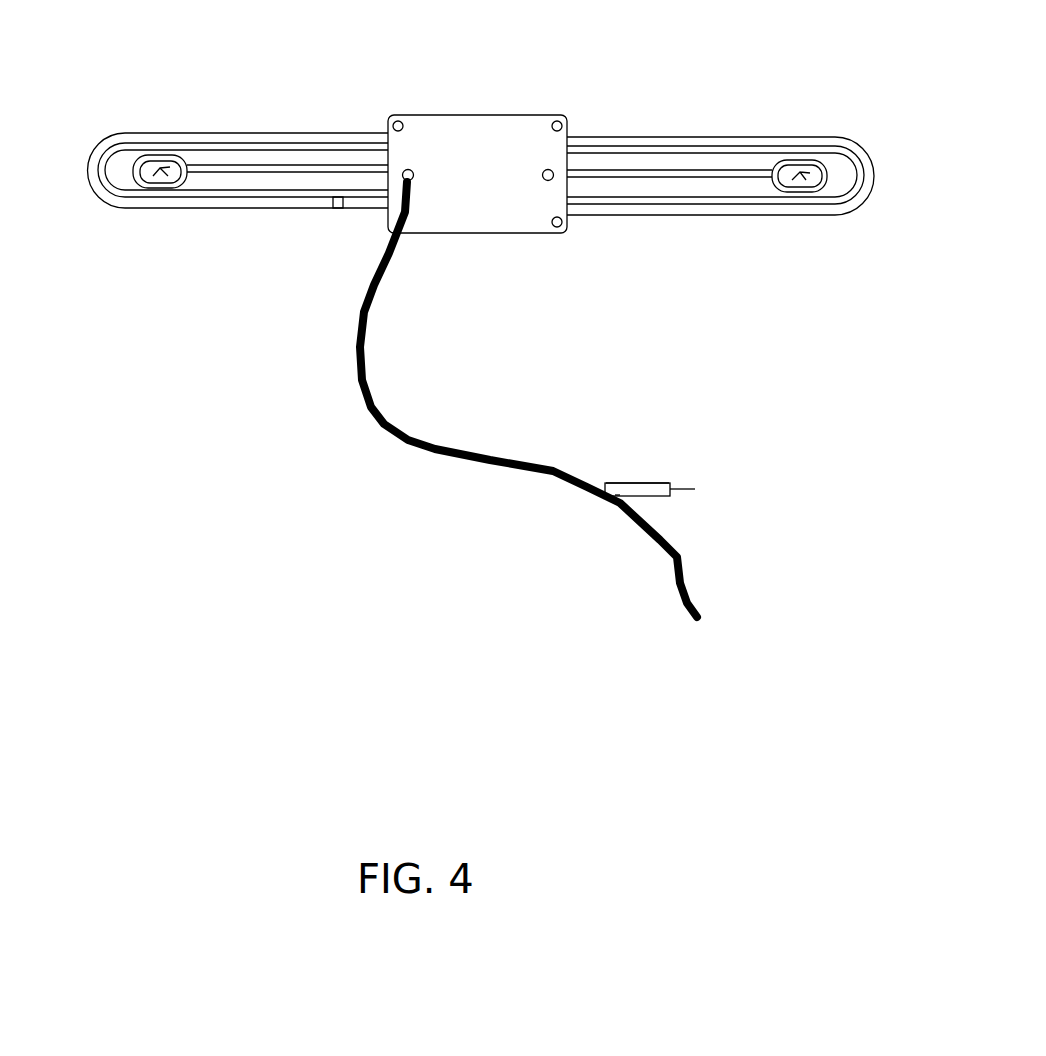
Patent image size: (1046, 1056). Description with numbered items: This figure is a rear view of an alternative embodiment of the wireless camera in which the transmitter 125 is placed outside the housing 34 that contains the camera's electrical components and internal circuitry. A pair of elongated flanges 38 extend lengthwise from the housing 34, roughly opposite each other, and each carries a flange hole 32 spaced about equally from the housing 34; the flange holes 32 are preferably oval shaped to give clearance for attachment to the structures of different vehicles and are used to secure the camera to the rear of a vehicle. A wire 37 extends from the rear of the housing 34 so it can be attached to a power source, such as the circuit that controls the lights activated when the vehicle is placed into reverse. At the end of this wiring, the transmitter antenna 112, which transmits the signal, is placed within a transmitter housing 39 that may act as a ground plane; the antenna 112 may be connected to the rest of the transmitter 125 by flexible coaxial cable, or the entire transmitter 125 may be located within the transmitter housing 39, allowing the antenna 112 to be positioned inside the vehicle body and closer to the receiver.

The housing 34 is at (478, 152).
The elongated flanges 38 is at (270, 165).
The flange holes 32 is at (143, 200).
The wire 37 is at (433, 437).
The transmitter antenna 112 is at (695, 489).
The transmitter housing 39 is at (620, 496).
The transmitter 125 is at (633, 462).